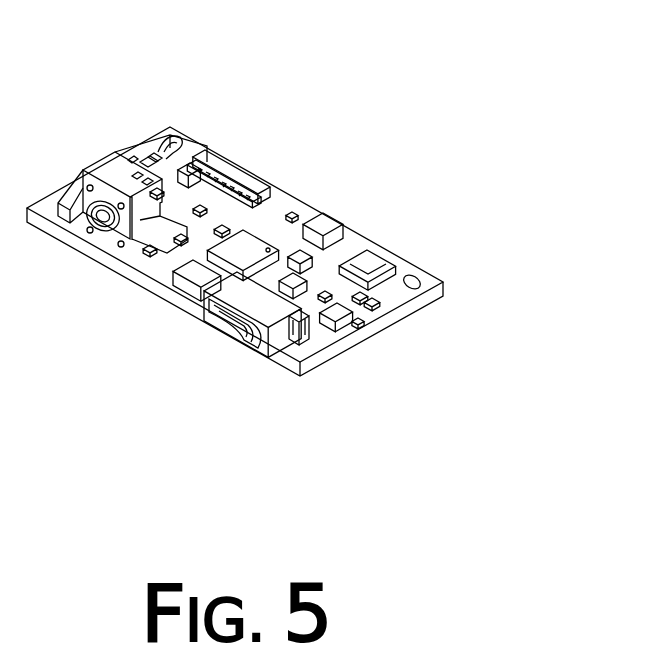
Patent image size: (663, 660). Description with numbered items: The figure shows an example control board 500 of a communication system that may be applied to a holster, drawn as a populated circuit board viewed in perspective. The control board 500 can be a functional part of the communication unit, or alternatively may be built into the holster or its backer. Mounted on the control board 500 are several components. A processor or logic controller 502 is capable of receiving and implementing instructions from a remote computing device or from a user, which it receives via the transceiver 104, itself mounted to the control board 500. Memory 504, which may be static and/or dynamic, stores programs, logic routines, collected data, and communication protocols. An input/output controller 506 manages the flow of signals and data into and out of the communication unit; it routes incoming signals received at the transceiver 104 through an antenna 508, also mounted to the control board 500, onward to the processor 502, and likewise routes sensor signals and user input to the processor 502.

The control board 500 is at (457, 66).
The processor or logic controller 502 is at (271, 228).
The memory 504 is at (179, 289).
The input/output controller 506 is at (360, 332).
The antenna 508 is at (140, 138).
The transceiver 104 is at (401, 260).